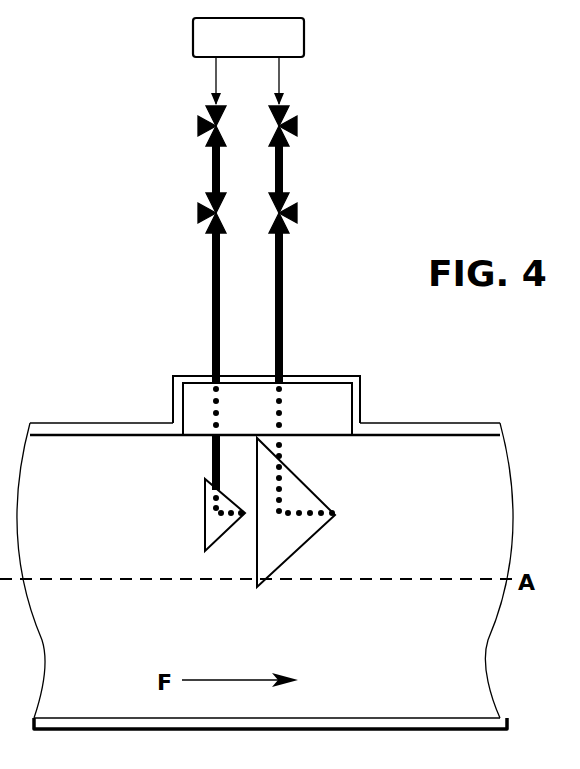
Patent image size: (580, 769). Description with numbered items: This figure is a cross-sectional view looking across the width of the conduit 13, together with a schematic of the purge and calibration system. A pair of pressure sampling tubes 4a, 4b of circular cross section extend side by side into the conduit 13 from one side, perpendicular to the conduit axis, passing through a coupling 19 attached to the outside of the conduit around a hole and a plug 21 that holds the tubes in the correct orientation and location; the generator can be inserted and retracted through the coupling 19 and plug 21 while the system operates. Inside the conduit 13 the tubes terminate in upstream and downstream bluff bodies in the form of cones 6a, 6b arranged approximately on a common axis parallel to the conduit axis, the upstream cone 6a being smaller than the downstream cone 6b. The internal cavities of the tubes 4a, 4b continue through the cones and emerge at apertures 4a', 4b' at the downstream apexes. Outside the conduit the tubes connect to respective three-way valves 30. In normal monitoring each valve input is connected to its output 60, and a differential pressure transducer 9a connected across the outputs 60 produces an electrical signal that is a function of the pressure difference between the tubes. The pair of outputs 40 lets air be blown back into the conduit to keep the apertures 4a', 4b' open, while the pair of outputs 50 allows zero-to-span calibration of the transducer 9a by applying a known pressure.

The differential pressure sensor or transducer (DPT) 9a is at (306, 42).
The outputs of the valves 60 is at (243, 80).
The pair of outputs of the 3-way valves 50 is at (197, 126).
The pair of outputs of the 3-way valves 40 is at (197, 213).
The 3-way valves 30 is at (247, 169).
The pressure sampling tube 4a is at (168, 318).
The pressure sampling tube 4b is at (325, 290).
The aperture 4a' is at (233, 534).
The aperture 4b' is at (338, 480).
The plug 21 is at (344, 373).
The coupling 19 is at (360, 415).
The conduit 13 is at (462, 420).
The upstream bluff body (cone) 6a is at (200, 520).
The downstream bluff body (cone) 6b is at (312, 540).